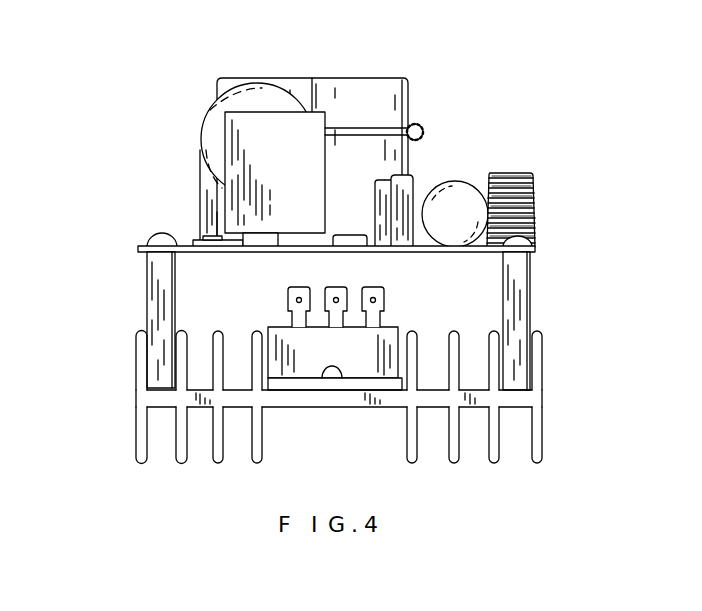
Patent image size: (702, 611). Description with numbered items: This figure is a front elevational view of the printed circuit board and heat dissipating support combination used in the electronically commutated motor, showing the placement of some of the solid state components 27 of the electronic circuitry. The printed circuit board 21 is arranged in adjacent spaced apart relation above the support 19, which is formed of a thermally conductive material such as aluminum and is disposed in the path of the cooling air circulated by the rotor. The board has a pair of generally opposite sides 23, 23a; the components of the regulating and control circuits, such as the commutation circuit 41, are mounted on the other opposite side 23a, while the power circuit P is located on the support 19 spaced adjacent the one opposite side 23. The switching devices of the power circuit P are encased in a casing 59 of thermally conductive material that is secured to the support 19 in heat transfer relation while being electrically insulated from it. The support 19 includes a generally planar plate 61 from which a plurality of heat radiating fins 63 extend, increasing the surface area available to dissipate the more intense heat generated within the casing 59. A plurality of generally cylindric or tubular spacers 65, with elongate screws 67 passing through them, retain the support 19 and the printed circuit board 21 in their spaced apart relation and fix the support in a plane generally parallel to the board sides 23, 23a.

The support 19 is at (303, 426).
The printed circuit board 21 is at (138, 248).
The opposite side 23 is at (190, 247).
The other opposite side 23a is at (193, 253).
The solid state components 27 is at (418, 77).
The commutation circuit 41 is at (467, 127).
The casing 59 is at (345, 357).
The plate 61 is at (303, 396).
The heat radiating fins 63 is at (183, 458).
The spacers 65 is at (160, 290).
The screws 67 is at (162, 233).
The power circuit P is at (357, 333).